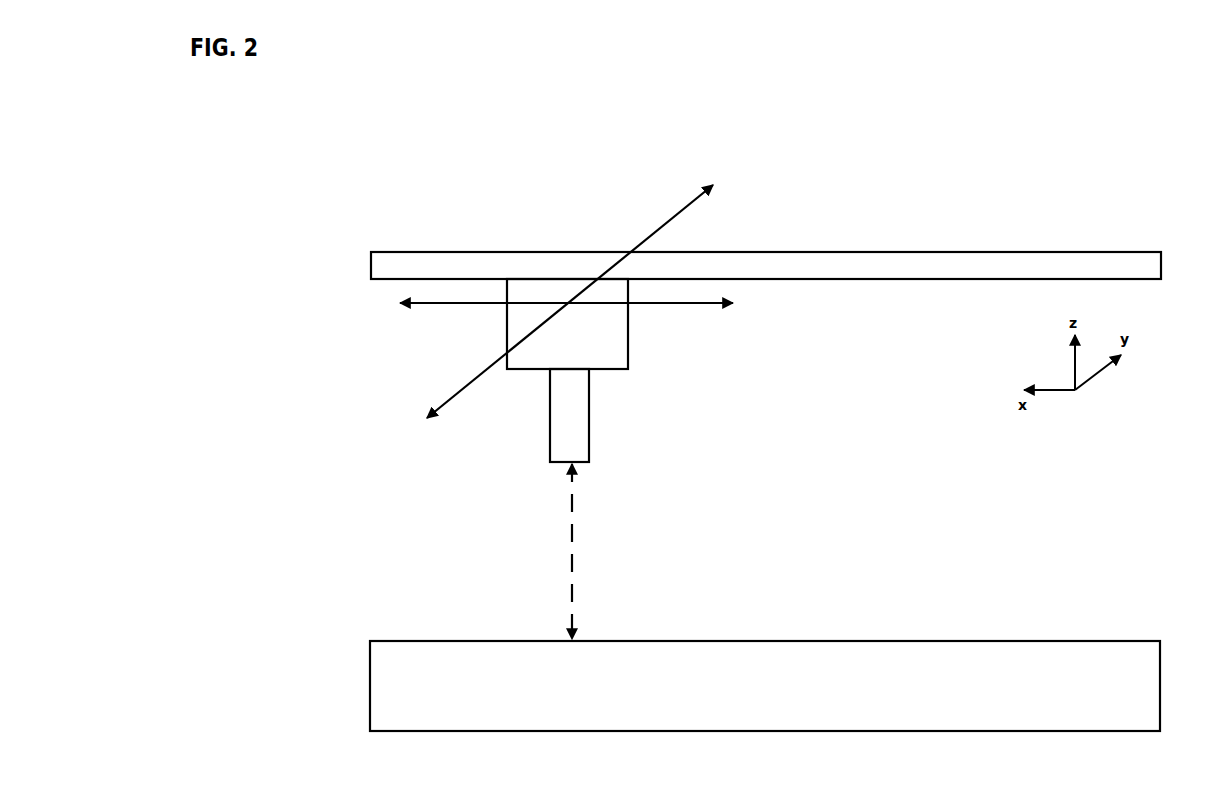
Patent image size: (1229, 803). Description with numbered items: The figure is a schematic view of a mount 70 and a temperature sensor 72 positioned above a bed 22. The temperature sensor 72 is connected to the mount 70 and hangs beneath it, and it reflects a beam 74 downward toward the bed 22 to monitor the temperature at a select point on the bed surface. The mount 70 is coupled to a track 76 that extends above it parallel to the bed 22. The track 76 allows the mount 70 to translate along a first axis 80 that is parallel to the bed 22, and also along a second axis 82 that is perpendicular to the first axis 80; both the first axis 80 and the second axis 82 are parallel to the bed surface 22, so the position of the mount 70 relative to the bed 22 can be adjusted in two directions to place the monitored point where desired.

The bed 22 is at (853, 641).
The mount 70 is at (628, 348).
The temperature sensor 72 is at (592, 437).
The beam 74 is at (572, 547).
The track 76 is at (897, 252).
The first axis 80 is at (467, 304).
The second axis 82 is at (662, 223).